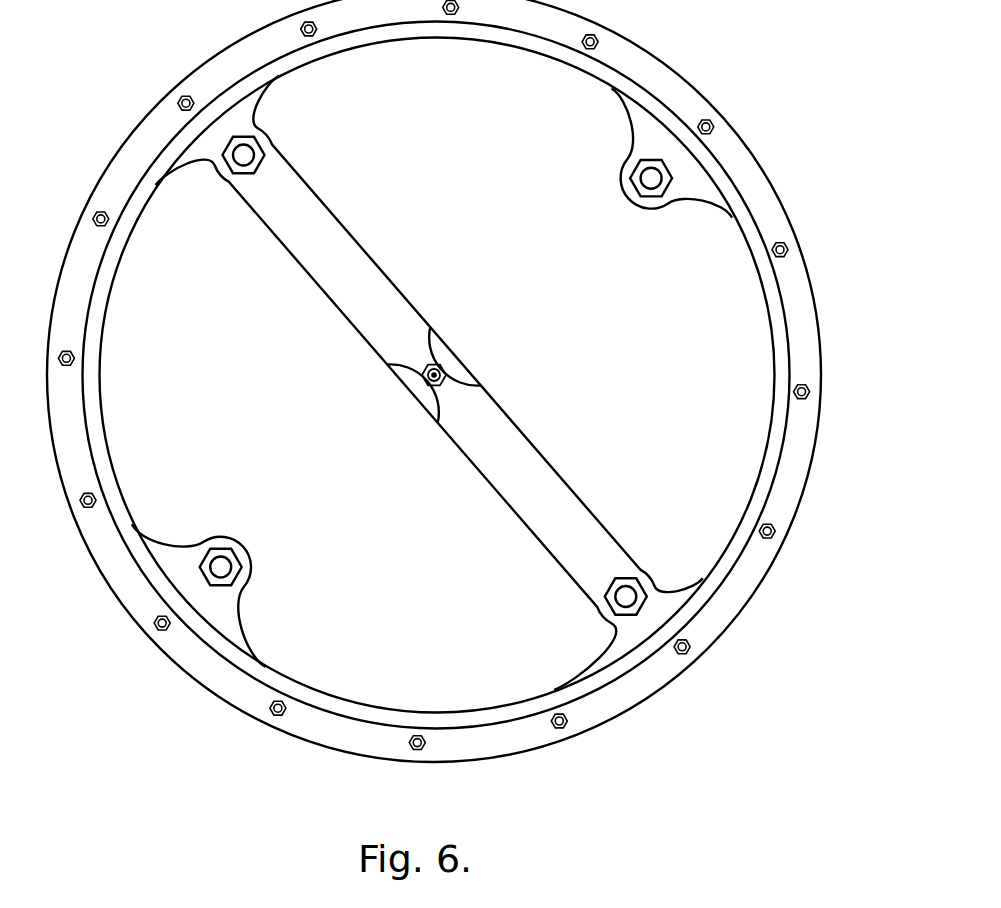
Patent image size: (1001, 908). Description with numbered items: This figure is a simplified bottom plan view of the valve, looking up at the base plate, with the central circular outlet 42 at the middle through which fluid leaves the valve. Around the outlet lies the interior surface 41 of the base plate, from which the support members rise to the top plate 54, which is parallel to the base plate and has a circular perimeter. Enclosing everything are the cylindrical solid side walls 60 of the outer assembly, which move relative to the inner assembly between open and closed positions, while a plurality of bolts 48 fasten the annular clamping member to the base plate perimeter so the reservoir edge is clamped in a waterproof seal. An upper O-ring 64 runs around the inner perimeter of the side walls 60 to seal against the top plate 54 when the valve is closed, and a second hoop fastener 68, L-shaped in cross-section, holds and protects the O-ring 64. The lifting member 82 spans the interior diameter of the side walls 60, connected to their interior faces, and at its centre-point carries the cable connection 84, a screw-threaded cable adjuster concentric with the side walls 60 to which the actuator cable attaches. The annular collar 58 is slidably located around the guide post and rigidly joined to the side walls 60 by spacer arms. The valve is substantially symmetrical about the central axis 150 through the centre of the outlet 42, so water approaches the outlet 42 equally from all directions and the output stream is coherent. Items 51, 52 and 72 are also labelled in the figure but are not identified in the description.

The interior surface 41 is at (172, 563).
The central circular outlet 42 is at (328, 603).
The bolts 48 is at (85, 212).
The mounting lug 51 is at (675, 148).
The nut 52 is at (687, 170).
The top plate 54 is at (418, 165).
The annular collar 58 is at (395, 408).
The solid side walls 60 is at (200, 82).
The upper O-ring 64 is at (175, 138).
The second hoop fastener 68 is at (163, 180).
The outer ring edge 72 is at (817, 298).
The lifting member 82 is at (322, 248).
The cable connection 84 is at (415, 371).
The central axis 150 is at (437, 363).